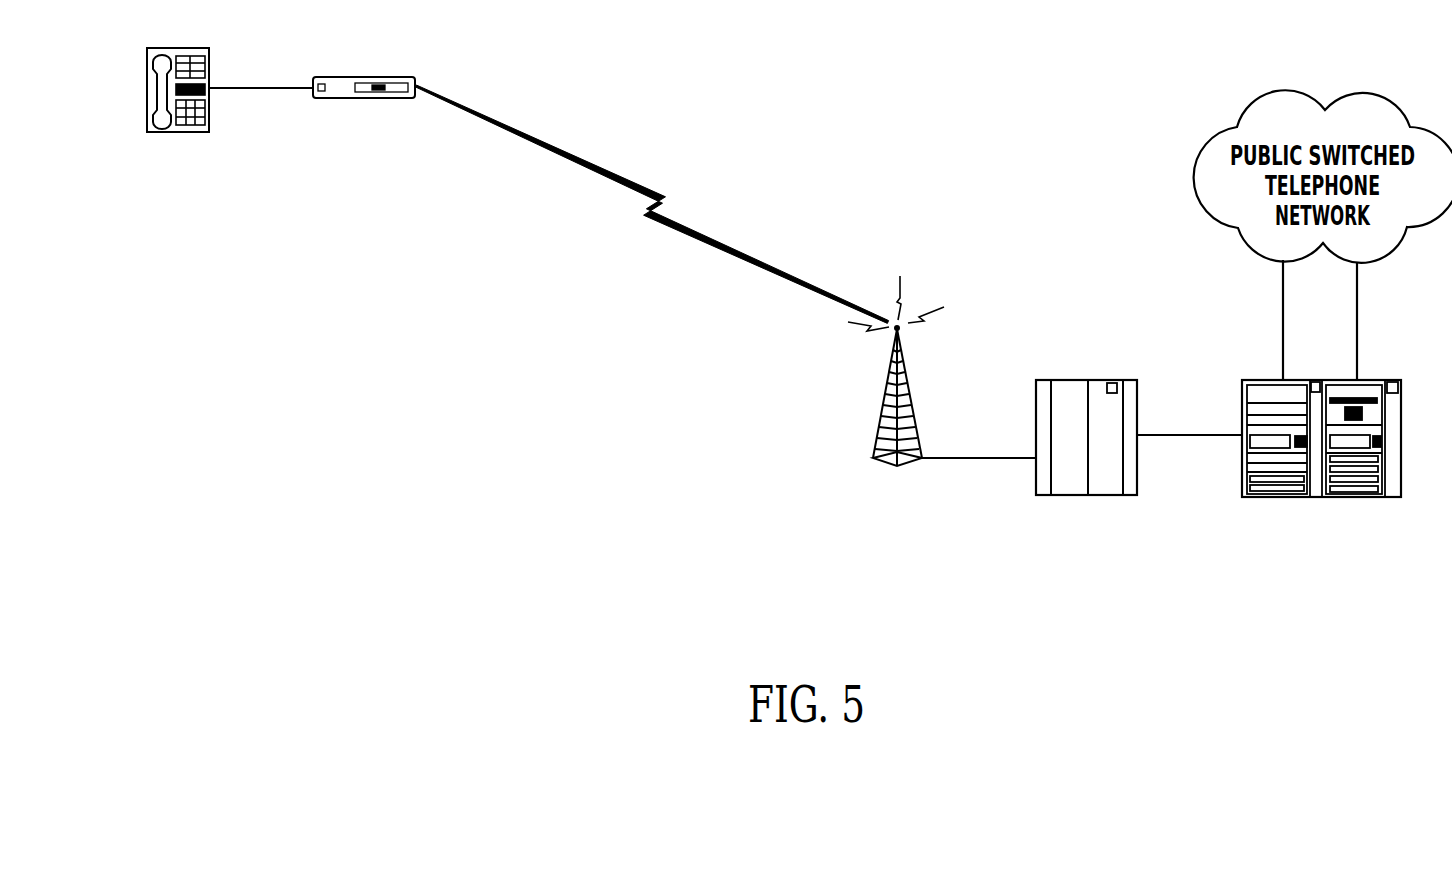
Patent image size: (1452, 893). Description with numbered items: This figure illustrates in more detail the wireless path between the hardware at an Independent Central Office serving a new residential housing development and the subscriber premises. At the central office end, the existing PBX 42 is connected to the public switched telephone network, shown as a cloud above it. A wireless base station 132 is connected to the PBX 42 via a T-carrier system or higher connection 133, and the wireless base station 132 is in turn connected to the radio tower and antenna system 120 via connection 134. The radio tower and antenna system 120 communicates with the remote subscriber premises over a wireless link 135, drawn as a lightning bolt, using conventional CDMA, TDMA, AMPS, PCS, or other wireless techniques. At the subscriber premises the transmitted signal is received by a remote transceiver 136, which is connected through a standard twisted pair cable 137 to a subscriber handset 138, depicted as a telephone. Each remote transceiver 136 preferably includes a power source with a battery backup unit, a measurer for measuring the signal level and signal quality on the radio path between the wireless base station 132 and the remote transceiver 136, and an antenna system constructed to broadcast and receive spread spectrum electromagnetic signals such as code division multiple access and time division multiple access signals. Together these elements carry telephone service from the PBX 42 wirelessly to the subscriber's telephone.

The subscriber handset 138 is at (178, 128).
The standard twisted pair cable 137 is at (278, 88).
The remote transceiver 136 is at (371, 140).
The wireless link 135 is at (652, 204).
The radio tower and antenna system 120 is at (894, 412).
The connection 134 is at (959, 458).
The wireless base station 132 is at (1103, 496).
The T-carrier system or higher connection 133 is at (1213, 435).
The PBX 42 is at (1321, 479).